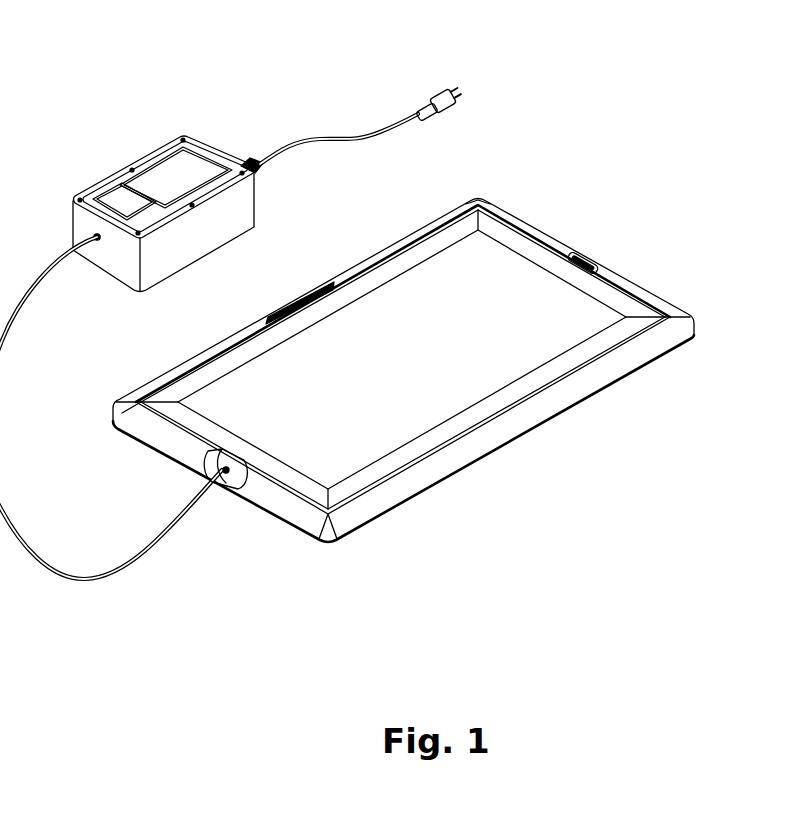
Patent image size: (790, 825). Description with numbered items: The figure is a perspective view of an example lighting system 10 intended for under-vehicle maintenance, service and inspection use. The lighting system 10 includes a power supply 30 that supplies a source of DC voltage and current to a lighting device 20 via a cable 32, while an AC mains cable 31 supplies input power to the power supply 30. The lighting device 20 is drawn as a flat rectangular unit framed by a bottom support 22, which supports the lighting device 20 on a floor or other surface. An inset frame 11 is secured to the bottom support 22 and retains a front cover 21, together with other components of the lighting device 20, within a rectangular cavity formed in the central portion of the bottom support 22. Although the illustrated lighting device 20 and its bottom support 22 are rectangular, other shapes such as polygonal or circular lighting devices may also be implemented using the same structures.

The lighting system 10 is at (560, 69).
The inset frame 11 is at (563, 358).
The lighting device 20 is at (639, 280).
The front cover 21 is at (402, 359).
The bottom support 22 is at (498, 432).
The power supply 30 is at (192, 134).
The AC mains cable 31 is at (365, 145).
The cable 32 is at (92, 583).